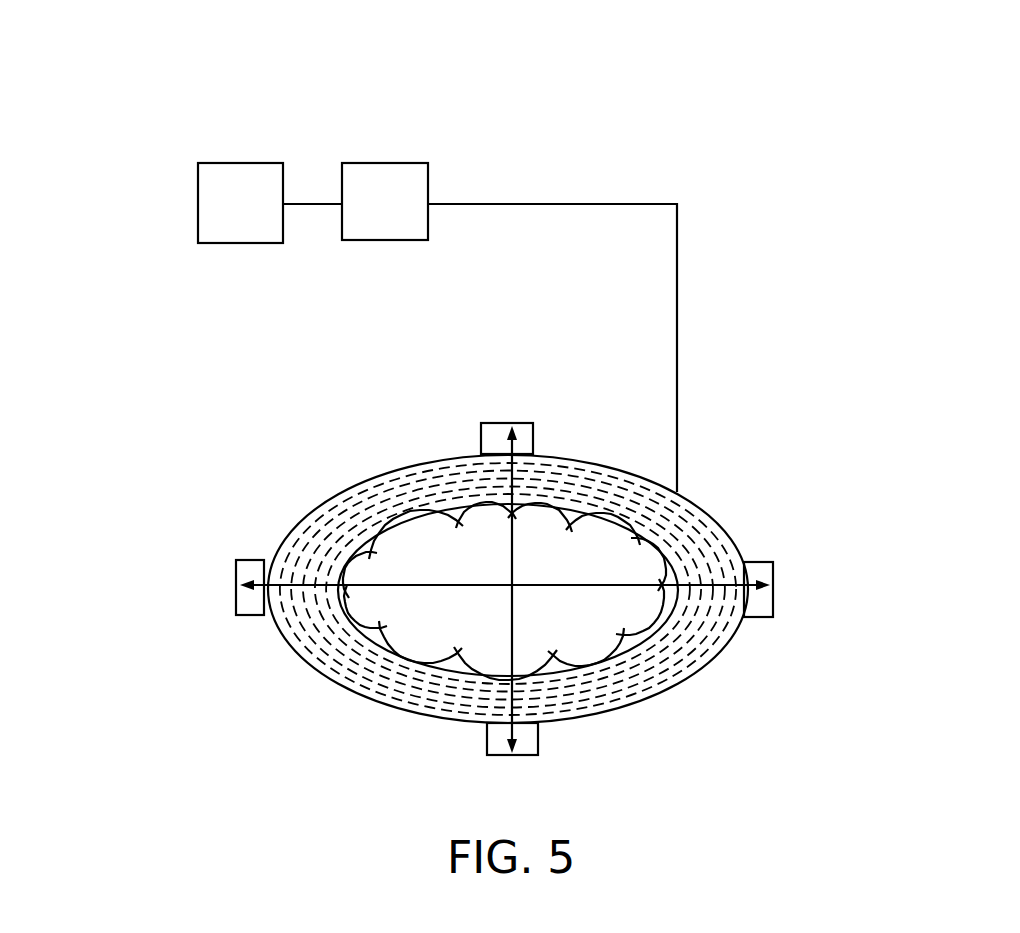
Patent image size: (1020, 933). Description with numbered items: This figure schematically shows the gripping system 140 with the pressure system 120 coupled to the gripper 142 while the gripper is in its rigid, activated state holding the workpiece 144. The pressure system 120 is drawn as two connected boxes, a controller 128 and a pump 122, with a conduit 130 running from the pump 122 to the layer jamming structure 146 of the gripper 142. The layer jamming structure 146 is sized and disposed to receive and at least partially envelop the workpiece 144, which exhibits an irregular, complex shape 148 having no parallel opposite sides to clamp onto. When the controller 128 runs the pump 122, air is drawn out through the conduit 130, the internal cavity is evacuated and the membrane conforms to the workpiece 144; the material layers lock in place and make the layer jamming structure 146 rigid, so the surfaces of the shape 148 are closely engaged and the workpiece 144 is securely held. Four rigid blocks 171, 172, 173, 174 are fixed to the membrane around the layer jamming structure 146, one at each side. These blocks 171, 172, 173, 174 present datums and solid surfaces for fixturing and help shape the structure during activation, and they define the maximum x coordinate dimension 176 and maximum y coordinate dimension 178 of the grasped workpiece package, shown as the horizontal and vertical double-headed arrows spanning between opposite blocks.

The pressure system 120 is at (205, 155).
The pump 122 is at (416, 220).
The controller 128 is at (271, 220).
The conduit 130 is at (581, 203).
The gripping system 140 is at (726, 206).
The gripper 142 is at (717, 510).
The workpiece 144 is at (630, 569).
The layer jamming structure 146 is at (397, 480).
The irregular complex shape 148 is at (368, 550).
The block 171 is at (252, 558).
The block 172 is at (488, 422).
The block 173 is at (774, 573).
The block 174 is at (539, 735).
The maximum x coordinate dimension 176 is at (393, 580).
The maximum y coordinate dimension 178 is at (531, 520).